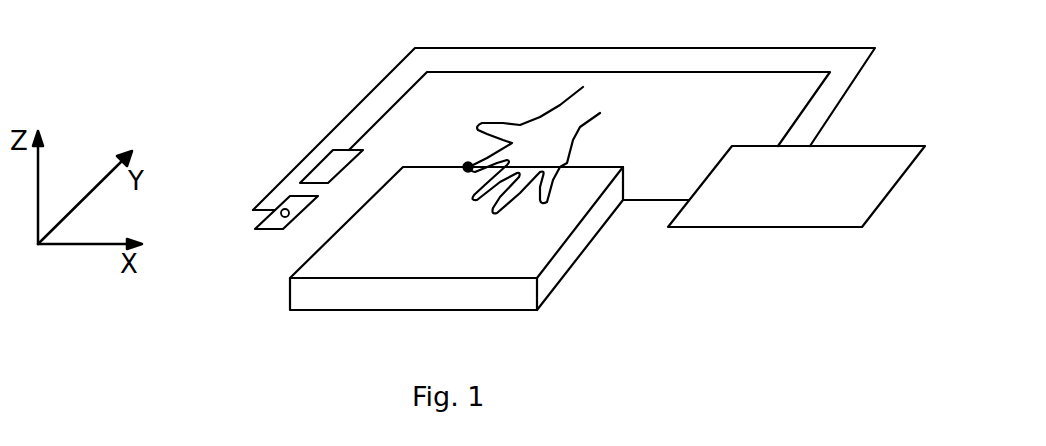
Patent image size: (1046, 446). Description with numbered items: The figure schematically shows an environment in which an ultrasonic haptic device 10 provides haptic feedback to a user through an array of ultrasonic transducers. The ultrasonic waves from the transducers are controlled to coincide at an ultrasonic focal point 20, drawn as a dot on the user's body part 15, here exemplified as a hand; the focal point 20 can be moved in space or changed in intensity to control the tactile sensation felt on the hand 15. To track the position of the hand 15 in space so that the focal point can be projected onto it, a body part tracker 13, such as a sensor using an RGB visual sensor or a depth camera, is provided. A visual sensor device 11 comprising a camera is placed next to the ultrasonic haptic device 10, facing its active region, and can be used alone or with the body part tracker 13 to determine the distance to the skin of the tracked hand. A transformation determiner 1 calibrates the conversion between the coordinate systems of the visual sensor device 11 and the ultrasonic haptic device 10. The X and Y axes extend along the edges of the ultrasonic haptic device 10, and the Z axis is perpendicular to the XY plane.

The transformation determiner 1 is at (727, 227).
The ultrasonic haptic device 10 is at (443, 267).
The visual sensor device 11 is at (262, 247).
The body part tracker 13 is at (309, 175).
The body part 15 is at (583, 107).
The ultrasonic focal point 20 is at (466, 164).